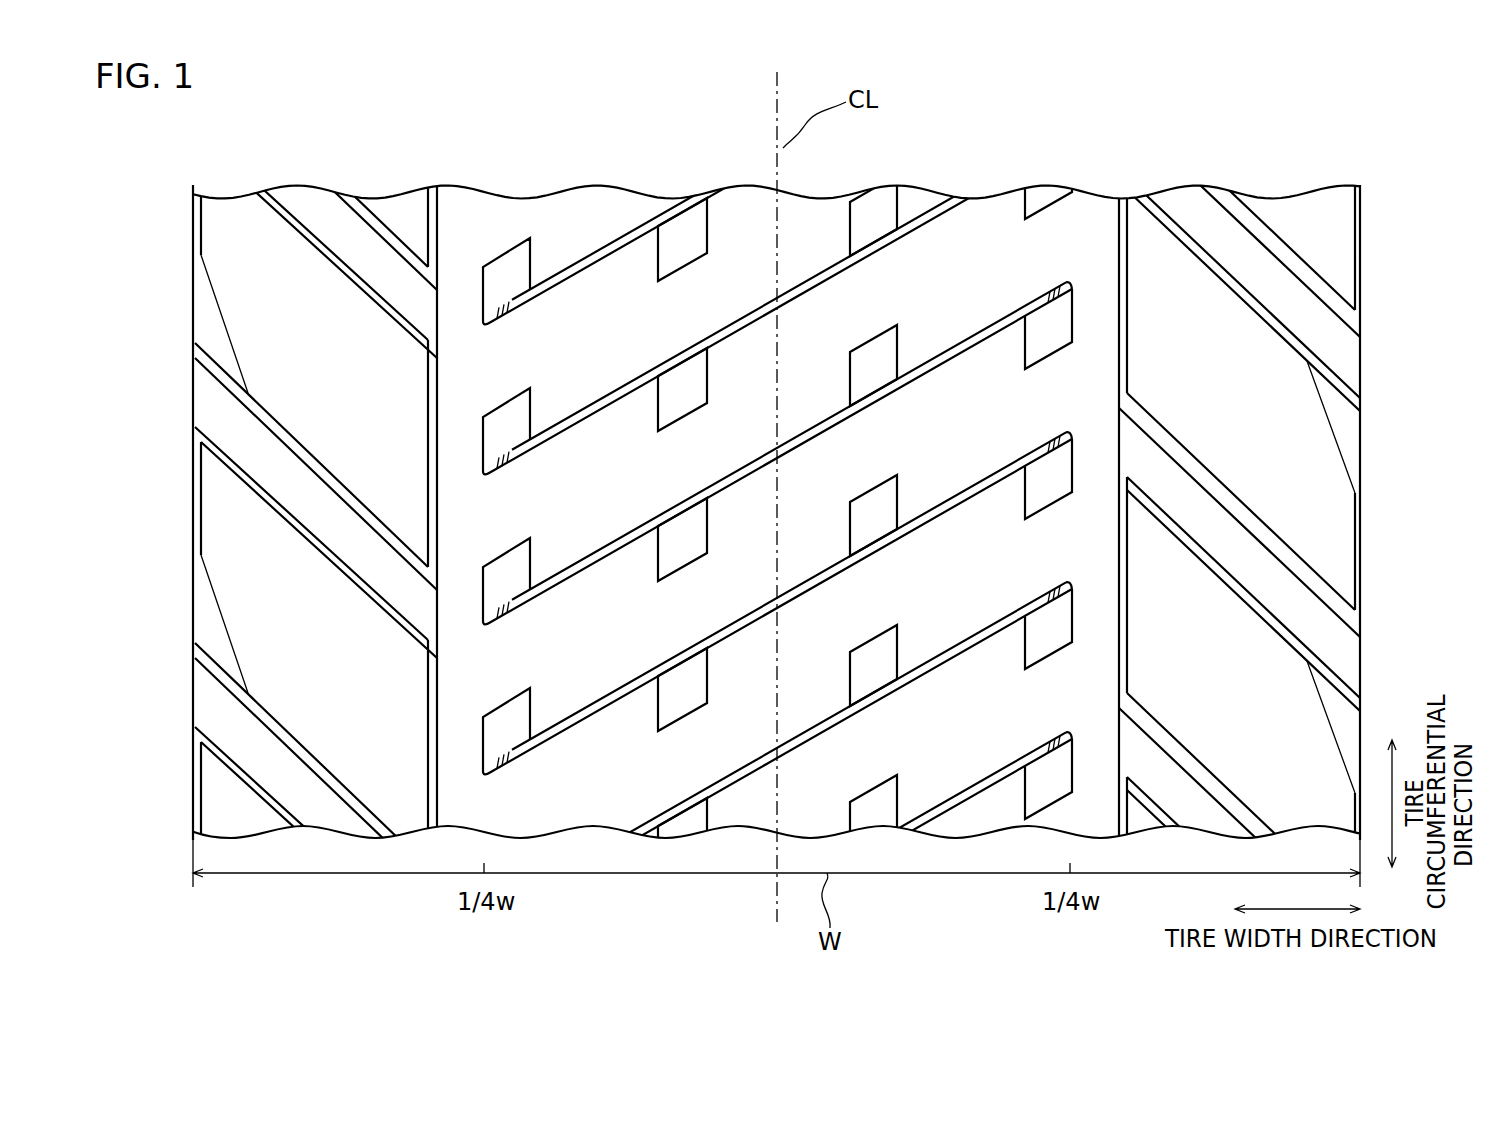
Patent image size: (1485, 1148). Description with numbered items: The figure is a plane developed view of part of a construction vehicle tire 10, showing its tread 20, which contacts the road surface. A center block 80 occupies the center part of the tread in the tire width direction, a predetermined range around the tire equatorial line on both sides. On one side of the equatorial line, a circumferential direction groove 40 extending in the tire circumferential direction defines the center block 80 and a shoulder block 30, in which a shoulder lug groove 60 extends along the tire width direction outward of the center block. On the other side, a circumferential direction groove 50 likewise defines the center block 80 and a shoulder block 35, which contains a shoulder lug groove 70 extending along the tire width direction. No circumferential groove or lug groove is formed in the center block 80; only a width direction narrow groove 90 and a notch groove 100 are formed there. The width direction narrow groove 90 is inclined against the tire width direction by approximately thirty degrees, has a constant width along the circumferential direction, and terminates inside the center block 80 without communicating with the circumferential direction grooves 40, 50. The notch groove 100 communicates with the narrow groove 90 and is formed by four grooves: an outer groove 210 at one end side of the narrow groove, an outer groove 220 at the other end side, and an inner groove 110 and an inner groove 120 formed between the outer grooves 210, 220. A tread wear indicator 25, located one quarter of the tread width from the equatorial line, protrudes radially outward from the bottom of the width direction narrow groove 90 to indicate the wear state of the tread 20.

The construction vehicle tire 10 is at (1286, 146).
The tread 20 is at (1092, 197).
The tread wear indicator 25 is at (1075, 292).
The shoulder block 30 is at (1318, 187).
The shoulder block 35 is at (378, 197).
The circumferential direction groove 40 is at (1127, 267).
The circumferential direction groove 50 is at (413, 408).
The shoulder lug groove 60 is at (1343, 350).
The shoulder lug groove 70 is at (213, 398).
The center block 80 is at (987, 233).
The width direction narrow groove 90 is at (945, 357).
The notch groove 100 is at (1026, 285).
The inner groove 110 is at (870, 358).
The inner groove 120 is at (685, 545).
The outer groove 210 is at (1050, 330).
The outer groove 220 is at (508, 580).